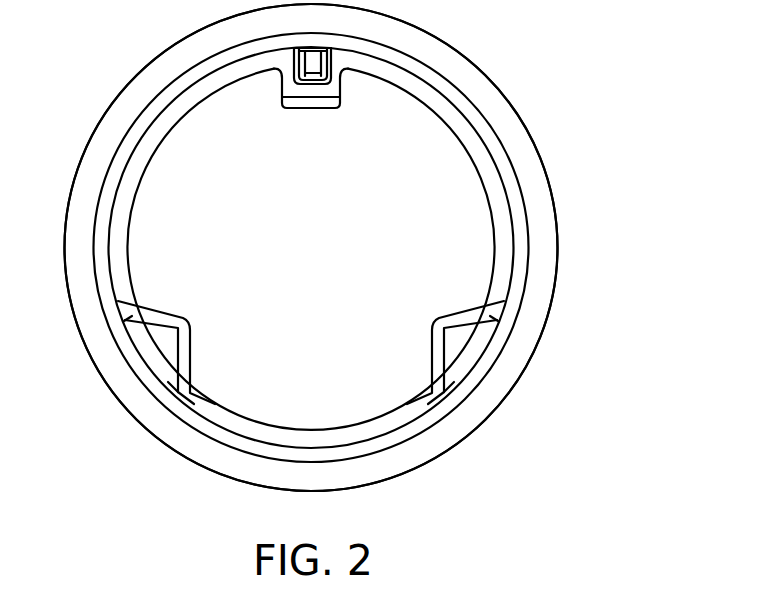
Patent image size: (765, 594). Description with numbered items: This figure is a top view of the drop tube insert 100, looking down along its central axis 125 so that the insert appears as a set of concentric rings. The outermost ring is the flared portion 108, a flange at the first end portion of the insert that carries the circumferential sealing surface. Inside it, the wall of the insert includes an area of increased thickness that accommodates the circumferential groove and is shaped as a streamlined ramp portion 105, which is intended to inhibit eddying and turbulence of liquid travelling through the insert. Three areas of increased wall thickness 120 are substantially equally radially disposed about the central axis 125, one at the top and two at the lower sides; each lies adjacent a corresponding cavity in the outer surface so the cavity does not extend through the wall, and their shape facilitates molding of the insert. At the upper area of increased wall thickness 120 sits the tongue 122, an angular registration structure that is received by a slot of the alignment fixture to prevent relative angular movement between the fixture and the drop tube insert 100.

The drop tube insert 100 is at (344, 245).
The streamlined ramp portion 105 is at (141, 178).
The flared portion 108 is at (546, 185).
The area of increased wall thickness 120 is at (305, 108).
The tongue 122 is at (328, 82).
The central axis 125 is at (312, 250).